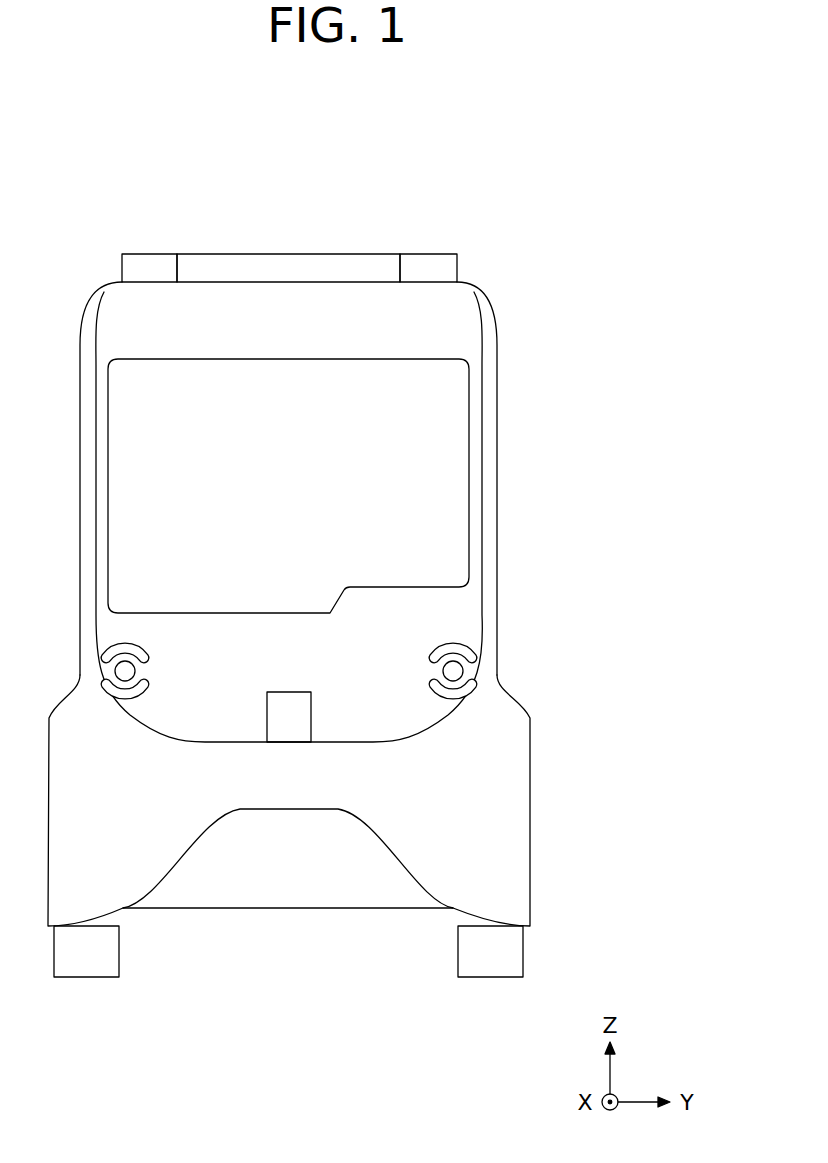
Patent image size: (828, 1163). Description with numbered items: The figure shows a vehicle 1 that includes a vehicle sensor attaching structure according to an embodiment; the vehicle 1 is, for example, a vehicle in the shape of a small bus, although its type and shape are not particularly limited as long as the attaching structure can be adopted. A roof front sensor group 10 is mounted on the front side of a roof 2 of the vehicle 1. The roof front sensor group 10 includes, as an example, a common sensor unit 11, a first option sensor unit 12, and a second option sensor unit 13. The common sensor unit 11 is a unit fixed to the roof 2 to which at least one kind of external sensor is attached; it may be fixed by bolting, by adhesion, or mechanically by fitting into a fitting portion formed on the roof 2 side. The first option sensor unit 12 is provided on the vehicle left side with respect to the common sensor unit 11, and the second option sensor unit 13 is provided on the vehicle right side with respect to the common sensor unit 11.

The vehicle 1 is at (322, 556).
The roof 2 is at (469, 292).
The roof front sensor group 10 is at (289, 208).
The common sensor unit 11 is at (291, 254).
The first option sensor unit 12 is at (428, 234).
The second option sensor unit 13 is at (152, 254).